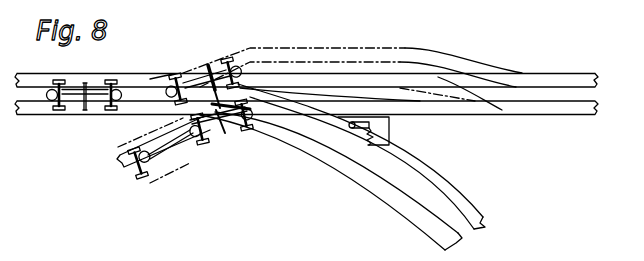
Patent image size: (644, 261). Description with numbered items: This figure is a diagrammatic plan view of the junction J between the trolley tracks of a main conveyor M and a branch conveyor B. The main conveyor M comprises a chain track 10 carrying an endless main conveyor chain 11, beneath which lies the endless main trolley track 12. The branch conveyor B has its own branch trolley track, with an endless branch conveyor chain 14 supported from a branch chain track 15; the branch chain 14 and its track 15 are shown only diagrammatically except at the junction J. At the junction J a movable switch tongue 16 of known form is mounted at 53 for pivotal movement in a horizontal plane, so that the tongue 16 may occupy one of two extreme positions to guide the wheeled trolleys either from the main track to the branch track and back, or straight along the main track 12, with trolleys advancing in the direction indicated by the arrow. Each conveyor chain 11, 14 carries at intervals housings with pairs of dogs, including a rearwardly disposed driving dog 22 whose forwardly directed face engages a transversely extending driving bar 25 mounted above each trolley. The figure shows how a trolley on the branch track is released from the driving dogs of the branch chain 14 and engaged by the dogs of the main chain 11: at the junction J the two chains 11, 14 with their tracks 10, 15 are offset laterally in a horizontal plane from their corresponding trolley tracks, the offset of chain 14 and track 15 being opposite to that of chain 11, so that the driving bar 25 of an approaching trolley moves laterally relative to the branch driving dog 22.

The main chain track 10 is at (71, 73).
The main conveyor chain 11 is at (404, 52).
The main trolley track 12 is at (466, 108).
The branch conveyor chain 14 is at (141, 179).
The branch chain track 15 is at (421, 183).
The switch tongue 16 is at (291, 92).
The driving dog 22 is at (210, 70).
The driving bar 25 is at (232, 60).
The pivotal mounting of switch tongue 53 is at (389, 125).
The junction J is at (196, 56).
The main conveyor M is at (556, 77).
The branch conveyor B is at (407, 224).